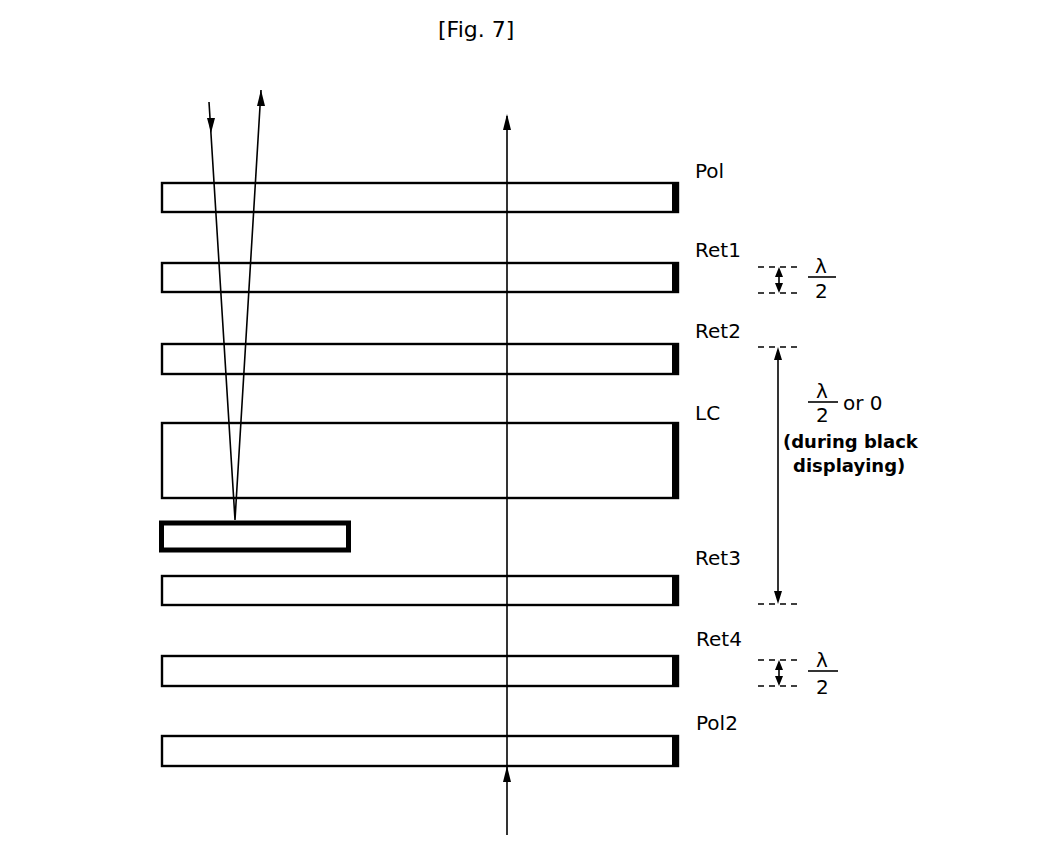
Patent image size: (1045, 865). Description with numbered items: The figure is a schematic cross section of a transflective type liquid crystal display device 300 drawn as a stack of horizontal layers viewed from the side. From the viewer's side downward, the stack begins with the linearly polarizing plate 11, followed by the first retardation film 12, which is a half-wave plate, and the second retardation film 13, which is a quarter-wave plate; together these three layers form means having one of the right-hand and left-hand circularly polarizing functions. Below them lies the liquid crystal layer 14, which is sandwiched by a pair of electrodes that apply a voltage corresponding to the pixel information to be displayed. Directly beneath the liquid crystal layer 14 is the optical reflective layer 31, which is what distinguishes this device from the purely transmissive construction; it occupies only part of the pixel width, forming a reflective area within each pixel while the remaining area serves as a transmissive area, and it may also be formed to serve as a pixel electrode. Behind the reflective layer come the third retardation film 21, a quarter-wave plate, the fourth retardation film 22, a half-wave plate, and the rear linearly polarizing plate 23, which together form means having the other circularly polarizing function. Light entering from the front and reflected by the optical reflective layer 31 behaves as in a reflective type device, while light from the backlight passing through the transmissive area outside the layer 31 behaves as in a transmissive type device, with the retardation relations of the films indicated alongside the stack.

The liquid crystal display device 300 is at (132, 137).
The linearly polarizing plate 11 is at (161, 197).
The first retardation film 12 is at (161, 275).
The second retardation film 13 is at (161, 356).
The liquid crystal layer 14 is at (161, 457).
The optical reflective layer 31 is at (161, 535).
The third retardation film 21 is at (161, 590).
The fourth retardation film 22 is at (161, 672).
The rear linearly polarizing plate 23 is at (161, 749).